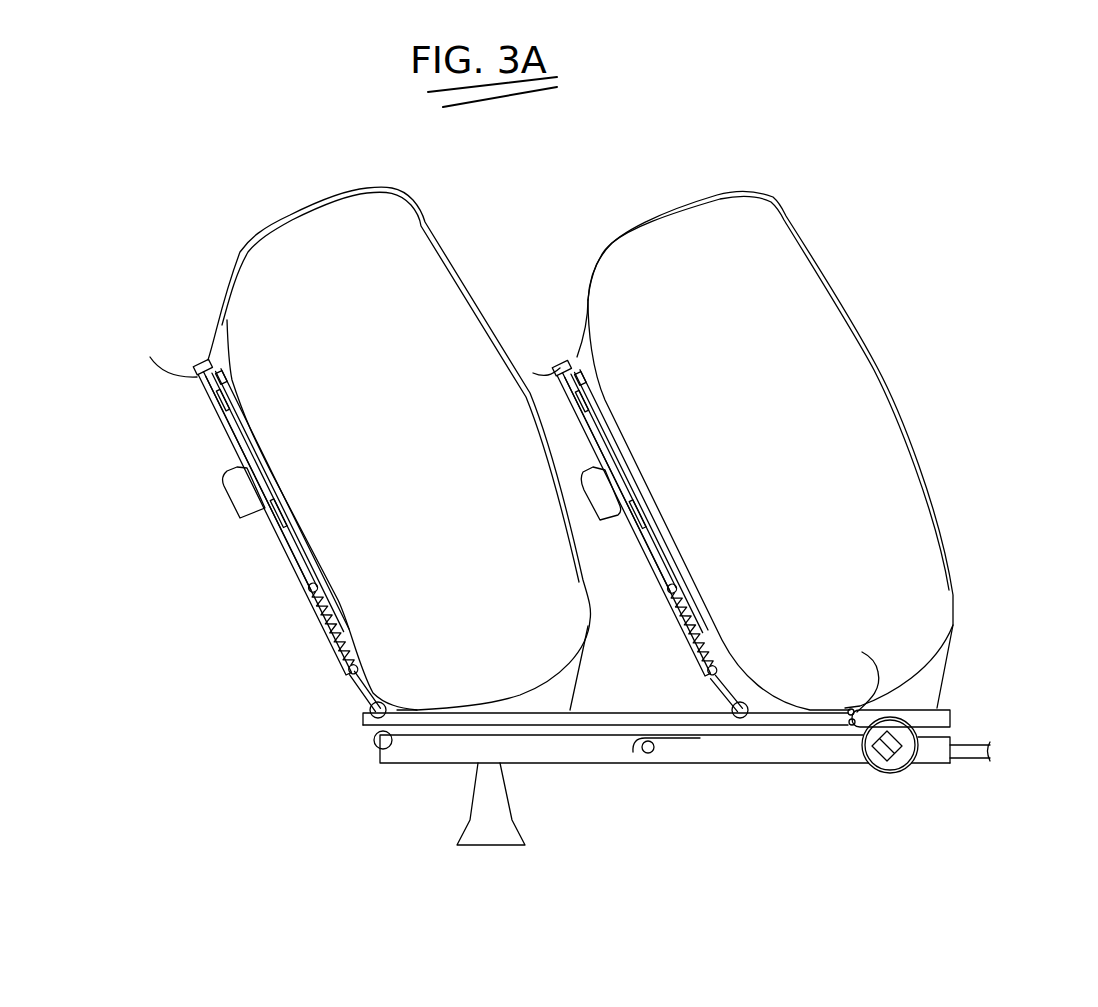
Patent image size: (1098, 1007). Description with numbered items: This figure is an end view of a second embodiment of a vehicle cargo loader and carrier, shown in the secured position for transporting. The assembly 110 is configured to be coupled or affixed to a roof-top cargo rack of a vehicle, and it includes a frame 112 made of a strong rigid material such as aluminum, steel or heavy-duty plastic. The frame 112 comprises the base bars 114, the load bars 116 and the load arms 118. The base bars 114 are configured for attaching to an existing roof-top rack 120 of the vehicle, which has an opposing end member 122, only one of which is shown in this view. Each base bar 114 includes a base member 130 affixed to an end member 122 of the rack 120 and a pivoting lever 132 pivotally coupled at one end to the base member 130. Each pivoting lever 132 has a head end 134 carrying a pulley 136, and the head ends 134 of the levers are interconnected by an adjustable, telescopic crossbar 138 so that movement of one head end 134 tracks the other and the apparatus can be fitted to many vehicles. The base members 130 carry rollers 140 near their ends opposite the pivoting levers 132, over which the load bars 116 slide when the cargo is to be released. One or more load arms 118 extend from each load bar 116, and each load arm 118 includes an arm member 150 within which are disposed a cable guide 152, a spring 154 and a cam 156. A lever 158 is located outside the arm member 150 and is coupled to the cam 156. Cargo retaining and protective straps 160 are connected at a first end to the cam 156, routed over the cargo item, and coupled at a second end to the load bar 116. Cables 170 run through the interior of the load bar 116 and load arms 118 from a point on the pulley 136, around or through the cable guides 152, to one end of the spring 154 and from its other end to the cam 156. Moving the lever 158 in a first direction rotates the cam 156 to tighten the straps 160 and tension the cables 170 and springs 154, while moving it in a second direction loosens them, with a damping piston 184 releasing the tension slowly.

The assembly 110 is at (850, 92).
The frame 112 is at (324, 779).
The base bars 114 is at (648, 768).
The load bars 116 is at (950, 710).
The load arms 118 is at (288, 557).
The roof-top rack 120 is at (963, 772).
The end member 122 is at (973, 755).
The base member 130 is at (560, 748).
The pivoting lever 132 is at (783, 747).
The head end 134 is at (897, 765).
The pulley 136 is at (853, 688).
The adjustable crossbar 138 is at (883, 750).
The rollers 140 is at (378, 748).
The arm member 150 is at (353, 692).
The cable guide 152 is at (360, 717).
The spring 154 is at (320, 632).
The cam 156 is at (200, 380).
The lever 158 is at (223, 493).
The cargo retaining and protective straps 160 is at (217, 325).
The cables 170 is at (467, 720).
The damping piston 184 is at (282, 517).